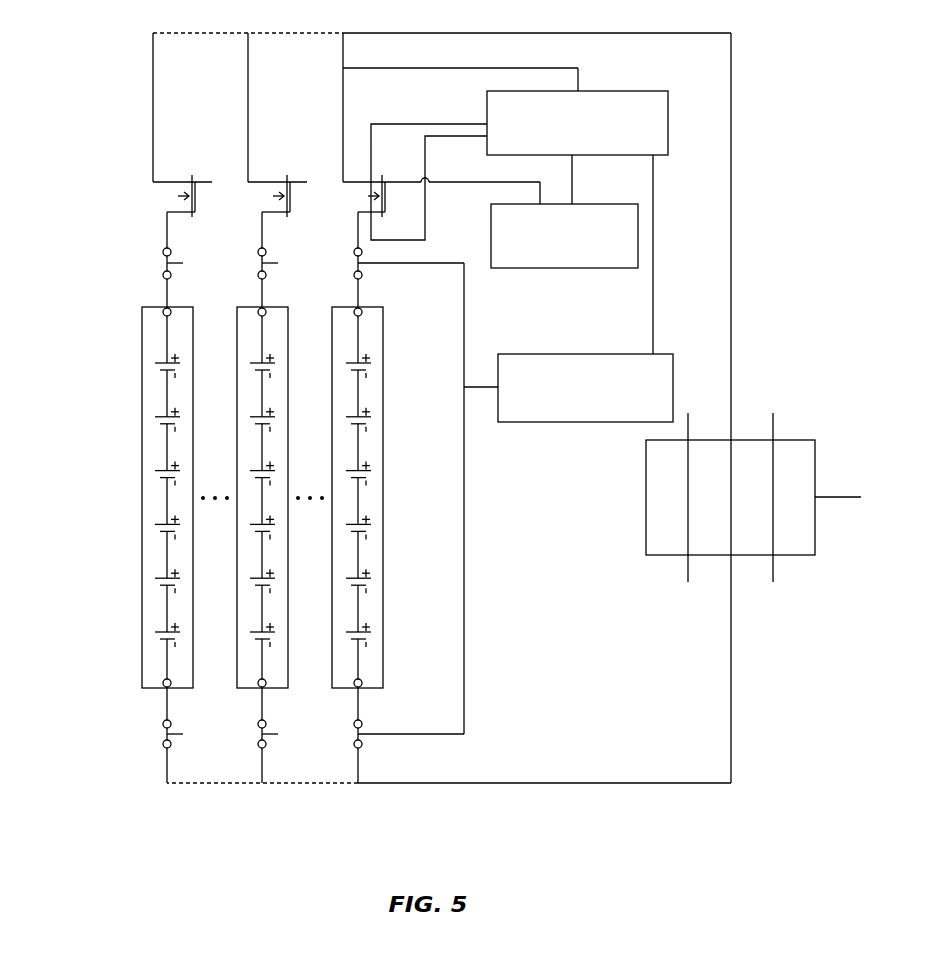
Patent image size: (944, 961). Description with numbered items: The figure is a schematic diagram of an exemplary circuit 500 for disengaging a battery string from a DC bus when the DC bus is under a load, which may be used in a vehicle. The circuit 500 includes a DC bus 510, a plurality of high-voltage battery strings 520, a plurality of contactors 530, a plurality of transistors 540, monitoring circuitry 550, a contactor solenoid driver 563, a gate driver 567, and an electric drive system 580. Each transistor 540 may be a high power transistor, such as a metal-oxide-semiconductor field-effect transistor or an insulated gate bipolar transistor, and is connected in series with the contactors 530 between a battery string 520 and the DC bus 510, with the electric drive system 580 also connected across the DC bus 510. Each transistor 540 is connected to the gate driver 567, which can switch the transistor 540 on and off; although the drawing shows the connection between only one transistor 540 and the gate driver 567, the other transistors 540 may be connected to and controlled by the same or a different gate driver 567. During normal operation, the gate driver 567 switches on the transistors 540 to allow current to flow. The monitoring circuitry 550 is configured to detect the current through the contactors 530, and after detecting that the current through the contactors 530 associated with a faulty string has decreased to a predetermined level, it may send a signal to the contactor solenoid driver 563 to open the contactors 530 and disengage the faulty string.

The circuit 500 is at (563, 728).
The DC bus 510 is at (442, 412).
The high-voltage battery strings 520 is at (130, 527).
The contactors 530 is at (152, 259).
The transistors 540 is at (145, 193).
The monitoring circuitry 550 is at (519, 222).
The contactor solenoid driver 563 is at (585, 388).
The gate driver 567 is at (564, 236).
The electric drive system 580 is at (753, 497).